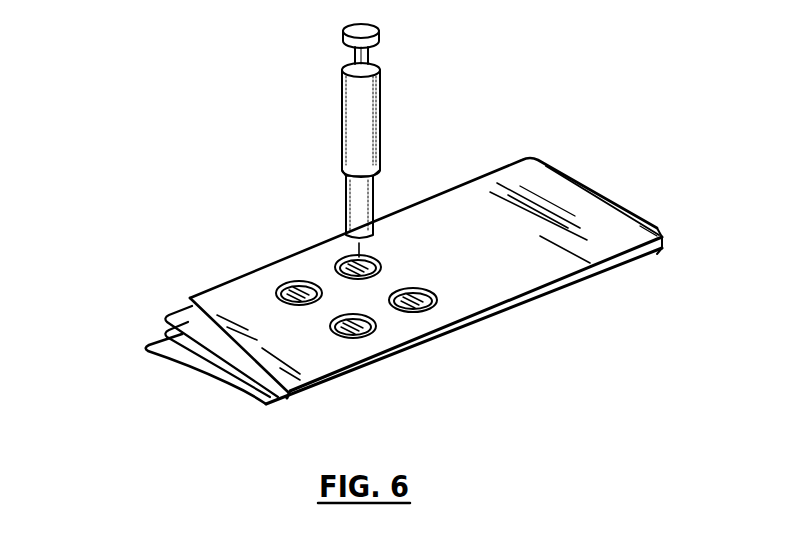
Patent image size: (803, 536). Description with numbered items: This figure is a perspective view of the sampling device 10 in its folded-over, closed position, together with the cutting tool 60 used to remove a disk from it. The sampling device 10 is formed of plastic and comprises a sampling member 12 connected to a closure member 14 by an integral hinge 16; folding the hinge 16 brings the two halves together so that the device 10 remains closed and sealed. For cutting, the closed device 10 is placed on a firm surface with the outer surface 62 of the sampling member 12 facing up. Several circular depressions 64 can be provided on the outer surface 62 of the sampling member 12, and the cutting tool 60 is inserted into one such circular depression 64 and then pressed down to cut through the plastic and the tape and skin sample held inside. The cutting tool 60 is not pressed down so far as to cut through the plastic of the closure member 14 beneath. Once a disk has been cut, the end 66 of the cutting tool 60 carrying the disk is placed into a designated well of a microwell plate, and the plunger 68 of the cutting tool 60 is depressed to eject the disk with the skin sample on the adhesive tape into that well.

The sampling device 10 is at (152, 238).
The sampling member 12 is at (190, 310).
The closure member 14 is at (522, 306).
The integral hinge 16 is at (645, 211).
The cutting tool 60 is at (381, 127).
The outer surface 62 is at (562, 196).
The circular depression 64 is at (381, 267).
The end of the cutting tool 66 is at (348, 201).
The plunger 68 is at (372, 33).